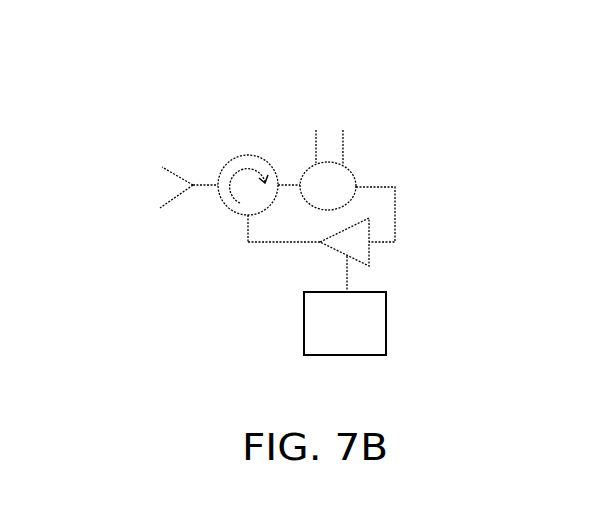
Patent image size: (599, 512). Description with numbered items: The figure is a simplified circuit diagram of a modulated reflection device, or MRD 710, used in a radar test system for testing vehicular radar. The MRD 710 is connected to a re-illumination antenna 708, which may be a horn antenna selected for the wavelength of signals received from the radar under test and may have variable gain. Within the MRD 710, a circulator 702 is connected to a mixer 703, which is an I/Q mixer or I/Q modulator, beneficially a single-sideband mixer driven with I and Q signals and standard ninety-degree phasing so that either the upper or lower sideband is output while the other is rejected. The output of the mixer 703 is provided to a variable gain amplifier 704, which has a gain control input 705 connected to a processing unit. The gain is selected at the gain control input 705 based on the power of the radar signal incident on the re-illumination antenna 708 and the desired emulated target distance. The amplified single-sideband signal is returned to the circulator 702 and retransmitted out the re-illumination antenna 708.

The modulated reflection device 710 is at (338, 54).
The circulator 702 is at (229, 167).
The mixer 703 is at (375, 179).
The variable gain amplifier 704 is at (356, 264).
The gain control input 705 is at (394, 334).
The re-illumination antenna 708 is at (148, 170).